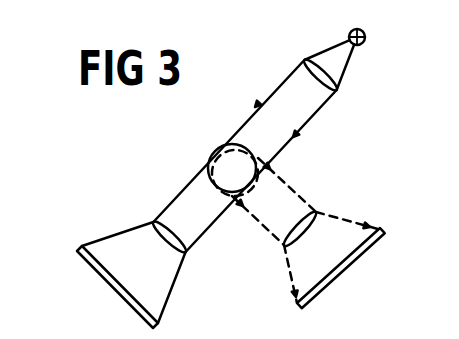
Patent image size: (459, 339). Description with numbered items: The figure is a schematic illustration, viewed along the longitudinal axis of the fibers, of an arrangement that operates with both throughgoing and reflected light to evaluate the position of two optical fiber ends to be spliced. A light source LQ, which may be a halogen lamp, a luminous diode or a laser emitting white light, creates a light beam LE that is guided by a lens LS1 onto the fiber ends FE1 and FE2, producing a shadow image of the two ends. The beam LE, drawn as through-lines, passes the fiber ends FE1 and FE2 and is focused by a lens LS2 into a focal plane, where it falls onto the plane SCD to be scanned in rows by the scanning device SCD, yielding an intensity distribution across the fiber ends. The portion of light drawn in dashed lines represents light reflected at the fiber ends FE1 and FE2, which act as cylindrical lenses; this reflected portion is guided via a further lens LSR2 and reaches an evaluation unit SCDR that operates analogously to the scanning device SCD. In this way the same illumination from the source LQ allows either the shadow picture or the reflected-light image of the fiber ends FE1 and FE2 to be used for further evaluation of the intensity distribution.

The light source LQ is at (365, 35).
The lens LS1 is at (342, 83).
The light beam LE is at (283, 90).
The fiber end FE1 is at (229, 144).
The fiber end FE2 is at (232, 197).
The lens LS2 is at (166, 213).
The scanning device SCD is at (91, 272).
The lens LSR2 is at (304, 209).
The evaluation unit SCDR is at (372, 244).